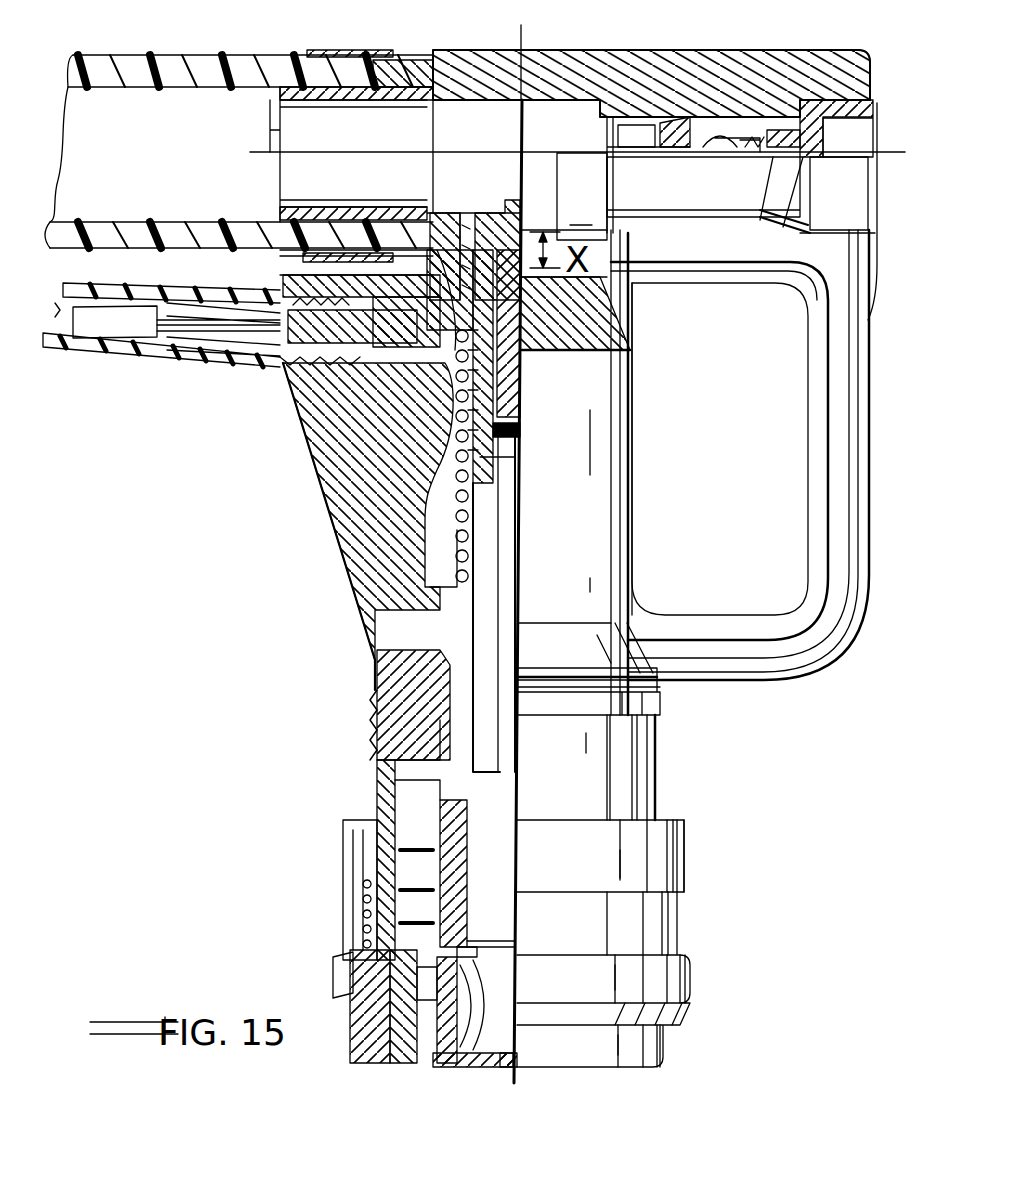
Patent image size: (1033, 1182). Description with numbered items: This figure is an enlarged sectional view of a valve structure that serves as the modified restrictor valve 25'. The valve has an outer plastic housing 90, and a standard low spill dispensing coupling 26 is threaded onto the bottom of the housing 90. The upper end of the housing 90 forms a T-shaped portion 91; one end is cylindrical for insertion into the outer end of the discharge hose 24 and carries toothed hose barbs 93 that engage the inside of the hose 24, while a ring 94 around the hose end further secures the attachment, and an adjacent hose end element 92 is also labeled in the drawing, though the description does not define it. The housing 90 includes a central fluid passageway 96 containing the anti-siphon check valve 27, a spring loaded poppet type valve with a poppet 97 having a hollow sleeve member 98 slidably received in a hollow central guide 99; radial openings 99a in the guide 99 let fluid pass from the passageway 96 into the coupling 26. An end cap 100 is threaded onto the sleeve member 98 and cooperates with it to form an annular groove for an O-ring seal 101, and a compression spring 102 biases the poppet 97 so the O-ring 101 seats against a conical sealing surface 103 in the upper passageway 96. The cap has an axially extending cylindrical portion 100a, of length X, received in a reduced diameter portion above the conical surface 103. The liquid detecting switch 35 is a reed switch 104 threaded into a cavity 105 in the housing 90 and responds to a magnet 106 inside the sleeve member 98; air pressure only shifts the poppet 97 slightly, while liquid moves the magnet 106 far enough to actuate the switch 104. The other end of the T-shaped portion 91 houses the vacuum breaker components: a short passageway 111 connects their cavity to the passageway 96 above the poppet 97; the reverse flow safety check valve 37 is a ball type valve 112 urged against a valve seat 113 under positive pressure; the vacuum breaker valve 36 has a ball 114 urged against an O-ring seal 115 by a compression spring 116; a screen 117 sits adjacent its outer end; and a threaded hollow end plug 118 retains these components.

The discharge hose 24 is at (150, 22).
The ring 94 is at (310, 50).
The fitting 92 is at (280, 115).
The toothed hose barbs 93 is at (400, 82).
The T-shaped portion 91 is at (505, 50).
The poppet 97 is at (462, 290).
The cylindrical portion 100a is at (448, 235).
The end cap 100 is at (502, 212).
The reed switch 104 is at (243, 252).
The cavity 105 is at (385, 272).
The O-ring seal 101 is at (432, 282).
The short passageway 111 is at (598, 117).
The ball type valve 112 is at (627, 125).
The reverse flow safety check valve 37 is at (655, 138).
The vacuum breaker valve 36 is at (775, 135).
The threaded hollow end plug 118 is at (886, 103).
The valve seat 113 is at (660, 142).
The compression spring 116 is at (712, 146).
The screen 117 is at (835, 150).
The ball 114 is at (770, 226).
The O-ring seal 115 is at (780, 205).
The liquid detecting switch 35 is at (283, 283).
The central fluid passageway 96 is at (435, 470).
The hollow sleeve member 98 is at (335, 419).
The anti-siphon check valve 27 is at (450, 525).
The compression spring 102 is at (485, 557).
The conical sealing surface 103 is at (518, 362).
The magnet 106 is at (565, 297).
The modified restrictor valve 25' is at (493, 478).
The radial openings 99a is at (372, 652).
The hollow central guide 99 is at (385, 713).
The outer plastic housing 90 is at (352, 600).
The low spill dispensing coupling 26 is at (342, 914).